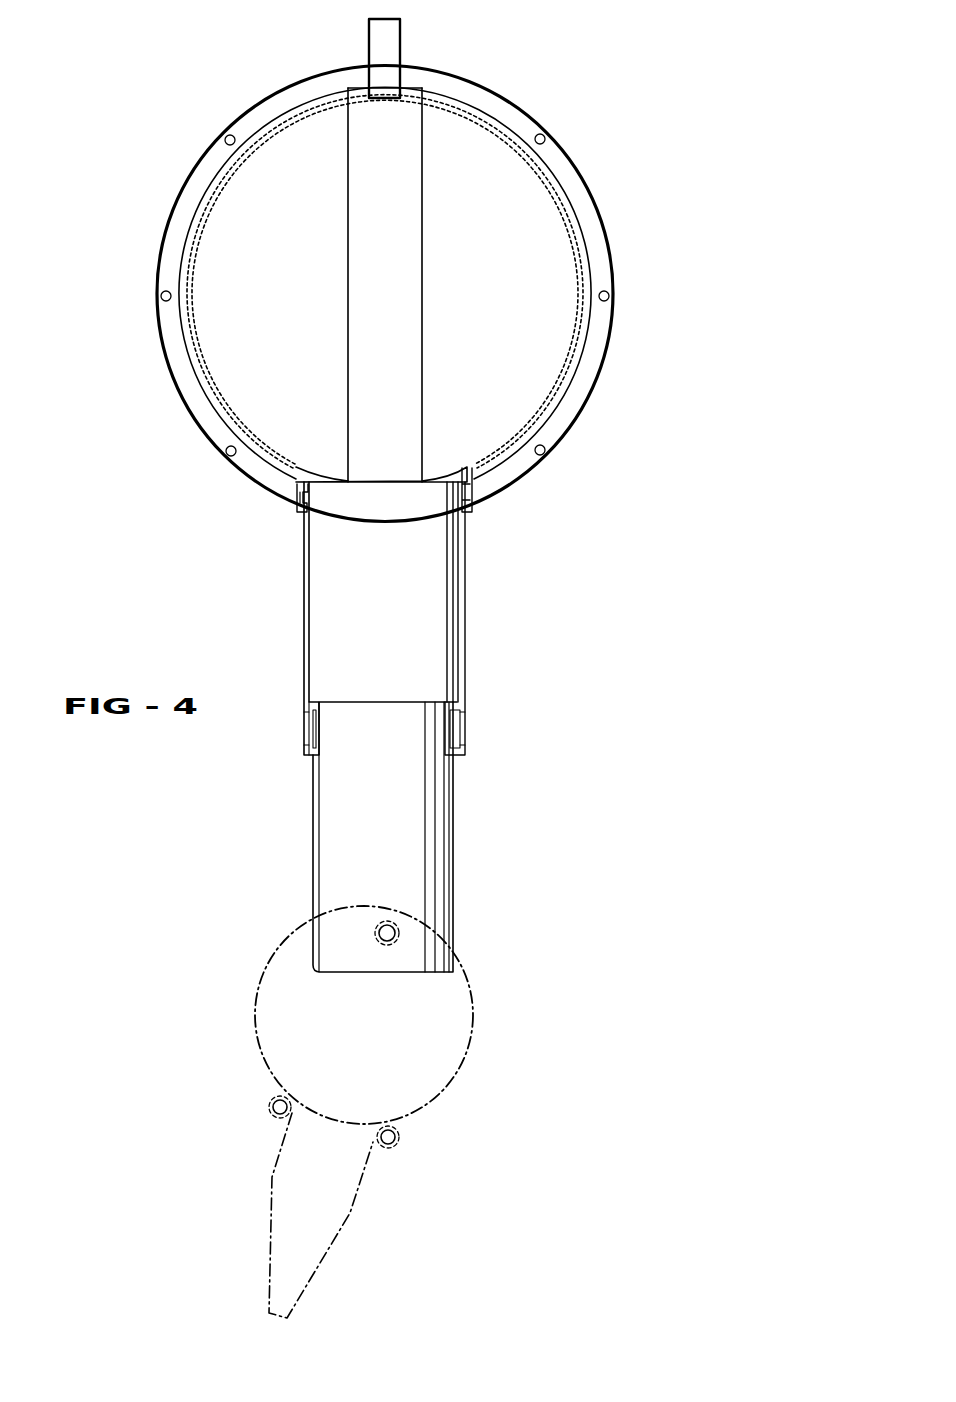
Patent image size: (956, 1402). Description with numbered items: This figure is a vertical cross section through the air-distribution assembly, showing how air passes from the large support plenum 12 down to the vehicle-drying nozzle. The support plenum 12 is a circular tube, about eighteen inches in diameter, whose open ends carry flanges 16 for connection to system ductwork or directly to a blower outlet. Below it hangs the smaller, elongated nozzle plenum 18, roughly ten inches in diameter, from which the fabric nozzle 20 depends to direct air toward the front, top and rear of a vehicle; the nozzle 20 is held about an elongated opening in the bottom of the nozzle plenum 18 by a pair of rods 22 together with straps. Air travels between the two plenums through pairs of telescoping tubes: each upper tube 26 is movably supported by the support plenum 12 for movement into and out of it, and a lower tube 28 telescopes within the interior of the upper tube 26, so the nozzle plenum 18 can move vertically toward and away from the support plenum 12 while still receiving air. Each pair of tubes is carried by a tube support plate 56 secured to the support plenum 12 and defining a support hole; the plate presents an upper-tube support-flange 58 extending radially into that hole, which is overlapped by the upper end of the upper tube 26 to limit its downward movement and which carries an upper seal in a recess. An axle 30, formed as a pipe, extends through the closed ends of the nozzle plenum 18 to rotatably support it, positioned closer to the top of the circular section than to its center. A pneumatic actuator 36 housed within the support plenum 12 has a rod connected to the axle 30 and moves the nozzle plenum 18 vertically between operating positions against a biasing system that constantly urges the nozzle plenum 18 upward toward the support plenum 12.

The support plenum 12 is at (532, 118).
The flanges 16 is at (610, 352).
The actuator 36 is at (422, 267).
The tube support plate 56 is at (294, 494).
The upper-tube support-flange 58 is at (474, 492).
The upper tube 26 is at (465, 660).
The lower tube 28 is at (453, 838).
The axle 30 is at (398, 935).
The nozzle plenum 18 is at (473, 1048).
The rods 22 is at (270, 1115).
The nozzle 20 is at (343, 1227).